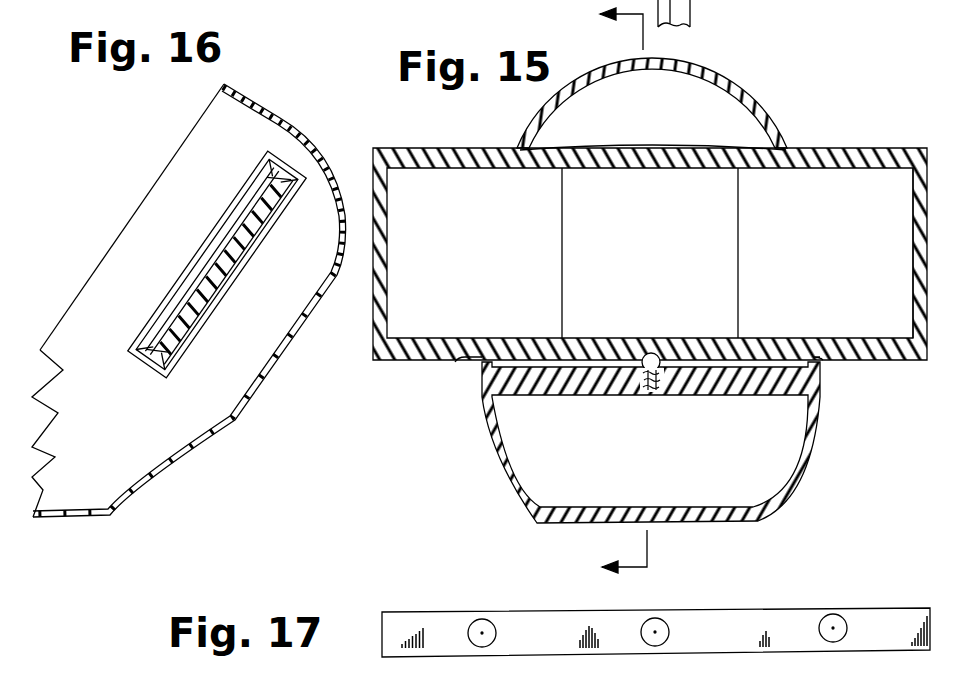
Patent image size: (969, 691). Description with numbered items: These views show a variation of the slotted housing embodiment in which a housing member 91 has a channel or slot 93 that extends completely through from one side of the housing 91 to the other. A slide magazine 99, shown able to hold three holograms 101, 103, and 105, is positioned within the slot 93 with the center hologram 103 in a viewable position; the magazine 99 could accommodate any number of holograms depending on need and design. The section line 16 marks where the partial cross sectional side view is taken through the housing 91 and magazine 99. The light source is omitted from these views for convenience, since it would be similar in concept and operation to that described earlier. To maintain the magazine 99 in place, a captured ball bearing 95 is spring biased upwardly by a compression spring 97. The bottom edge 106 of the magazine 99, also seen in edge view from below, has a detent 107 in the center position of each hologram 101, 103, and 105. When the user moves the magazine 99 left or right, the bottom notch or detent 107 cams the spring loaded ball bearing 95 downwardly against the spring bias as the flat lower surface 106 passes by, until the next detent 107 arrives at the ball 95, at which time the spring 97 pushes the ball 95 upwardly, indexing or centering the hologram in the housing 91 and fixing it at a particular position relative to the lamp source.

In FIG. 16, the housing member 91 is at (283, 118).
In FIG. 15, the housing member 91 is at (723, 79).
In FIG. 16, the slot 93 is at (216, 268).
In FIG. 15, the slot 93 is at (800, 152).
In FIG. 15, the captured ball bearing 95 is at (627, 392).
In FIG. 15, the compression spring 97 is at (660, 388).
In FIG. 16, the slide magazine 99 is at (207, 295).
In FIG. 15, the slide magazine 99 is at (867, 146).
In FIG. 15, the hologram 101 is at (508, 265).
In FIG. 16, the hologram 103 is at (206, 252).
In FIG. 15, the hologram 103 is at (686, 263).
In FIG. 15, the hologram 105 is at (860, 261).
In FIG. 15, the bottom edge 106 is at (867, 362).
In FIG. 17, the bottom edge 106 is at (703, 622).
In FIG. 15, the detent 107 is at (460, 364).
In FIG. 17, the detent 107 is at (833, 628).
In FIG. 15, the section line 16 is at (597, 292).